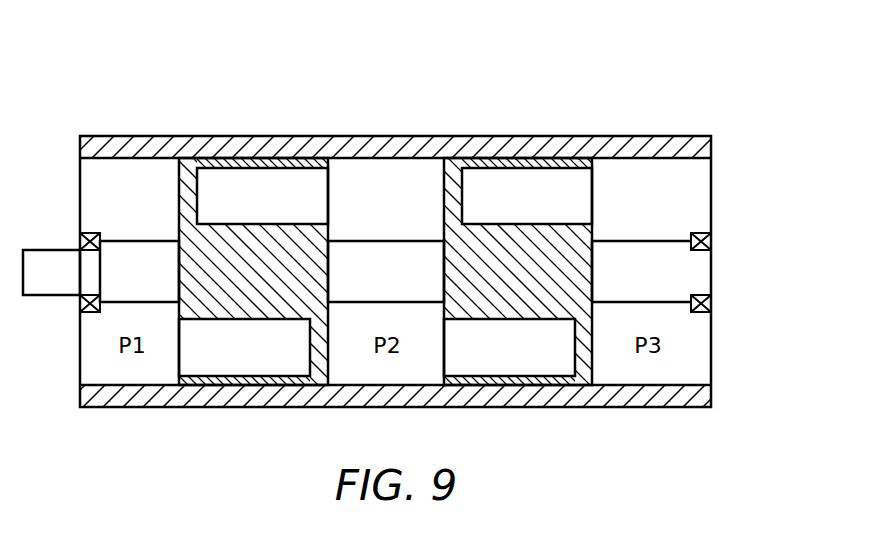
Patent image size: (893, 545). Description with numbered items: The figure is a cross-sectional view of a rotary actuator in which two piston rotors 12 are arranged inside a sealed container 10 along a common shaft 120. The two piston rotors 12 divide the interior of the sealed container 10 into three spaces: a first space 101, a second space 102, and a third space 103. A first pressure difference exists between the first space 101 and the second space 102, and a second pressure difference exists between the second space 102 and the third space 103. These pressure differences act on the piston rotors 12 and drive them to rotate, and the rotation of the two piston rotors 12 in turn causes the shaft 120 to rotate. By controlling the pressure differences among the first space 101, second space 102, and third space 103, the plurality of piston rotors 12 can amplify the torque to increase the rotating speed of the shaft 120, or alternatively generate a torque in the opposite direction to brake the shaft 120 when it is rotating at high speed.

The sealed container 10 is at (500, 152).
The piston rotor 12 is at (355, 169).
The shaft 120 is at (42, 258).
The first space 101 is at (155, 210).
The second space 102 is at (411, 210).
The third space 103 is at (671, 210).